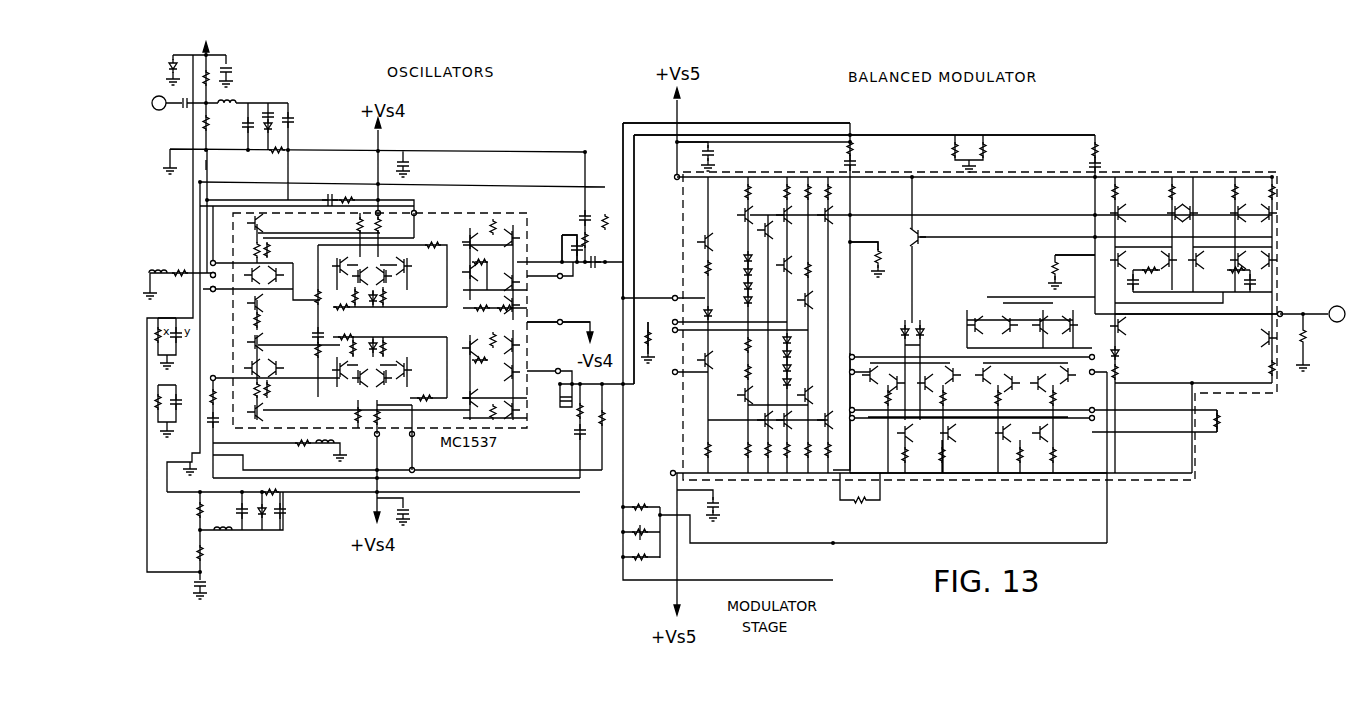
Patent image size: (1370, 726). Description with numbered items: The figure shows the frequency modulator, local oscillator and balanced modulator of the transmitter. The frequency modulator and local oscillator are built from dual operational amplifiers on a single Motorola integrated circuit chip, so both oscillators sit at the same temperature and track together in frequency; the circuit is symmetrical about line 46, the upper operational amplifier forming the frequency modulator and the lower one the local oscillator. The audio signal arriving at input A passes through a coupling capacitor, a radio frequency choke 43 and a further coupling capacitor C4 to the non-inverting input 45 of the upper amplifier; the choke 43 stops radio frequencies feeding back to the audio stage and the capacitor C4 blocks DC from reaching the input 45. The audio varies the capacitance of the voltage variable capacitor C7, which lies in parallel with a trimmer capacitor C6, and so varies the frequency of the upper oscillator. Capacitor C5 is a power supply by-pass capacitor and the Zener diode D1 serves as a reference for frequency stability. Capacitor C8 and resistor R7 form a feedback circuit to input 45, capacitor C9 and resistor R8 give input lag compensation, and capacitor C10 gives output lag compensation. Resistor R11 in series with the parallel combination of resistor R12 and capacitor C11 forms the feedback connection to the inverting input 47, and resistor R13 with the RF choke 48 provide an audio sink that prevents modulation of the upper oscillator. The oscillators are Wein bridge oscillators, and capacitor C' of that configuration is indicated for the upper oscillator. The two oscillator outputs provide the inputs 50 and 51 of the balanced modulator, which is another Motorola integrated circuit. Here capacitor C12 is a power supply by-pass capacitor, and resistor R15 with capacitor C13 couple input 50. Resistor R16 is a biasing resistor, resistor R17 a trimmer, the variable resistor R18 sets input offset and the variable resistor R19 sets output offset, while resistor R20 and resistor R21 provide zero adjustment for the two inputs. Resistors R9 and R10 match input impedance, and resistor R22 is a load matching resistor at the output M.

The Zener diode D1 is at (172, 52).
The power supply by-pass capacitor C5 is at (230, 64).
The input A is at (159, 103).
The radio frequency choke 43 is at (235, 102).
The voltage variable capacitor C7 is at (269, 109).
The coupling capacitor C4 is at (297, 122).
The trimmer capacitor C6 is at (247, 122).
The capacitor C9 is at (322, 201).
The resistor R8 is at (350, 200).
The RF choke 48 is at (156, 271).
The resistor R13 is at (181, 275).
The non-inverting input 45 is at (218, 288).
The inverting input 47 is at (218, 292).
The resistor R12 is at (156, 337).
The capacitor C11 is at (190, 334).
The line of symmetry 46 is at (558, 323).
The capacitor C8 is at (580, 213).
The resistor R11 is at (607, 222).
The capacitor C10 is at (562, 248).
The resistor R7 is at (587, 238).
The capacitor C' is at (594, 274).
The input 51 is at (630, 130).
The input 50 is at (644, 122).
The power supply by-pass capacitor C12 is at (714, 148).
The resistor R15 is at (858, 146).
The capacitor C13 is at (858, 162).
The input impedance matching resistor R9 is at (878, 259).
The input impedance matching resistor R10 is at (1058, 272).
The output M is at (1312, 315).
The loading matching resistor R22 is at (1308, 343).
The resistor R21 is at (1222, 415).
The biasing resistor R16 is at (647, 331).
The trimmer resistor R17 is at (650, 491).
The variable resistor R18 is at (630, 533).
The variable resistor R19 is at (630, 558).
The resistor R20 is at (851, 509).